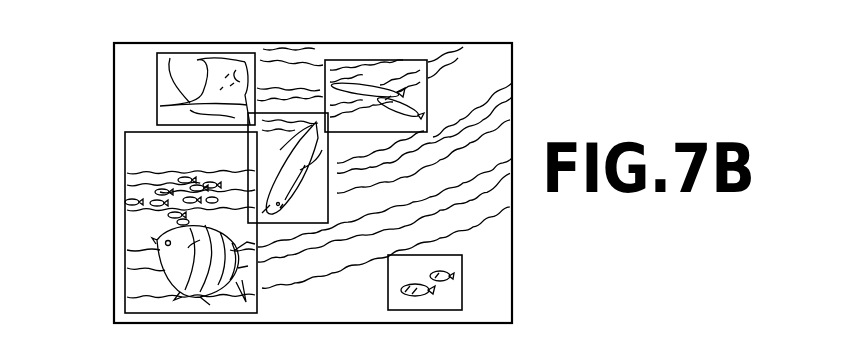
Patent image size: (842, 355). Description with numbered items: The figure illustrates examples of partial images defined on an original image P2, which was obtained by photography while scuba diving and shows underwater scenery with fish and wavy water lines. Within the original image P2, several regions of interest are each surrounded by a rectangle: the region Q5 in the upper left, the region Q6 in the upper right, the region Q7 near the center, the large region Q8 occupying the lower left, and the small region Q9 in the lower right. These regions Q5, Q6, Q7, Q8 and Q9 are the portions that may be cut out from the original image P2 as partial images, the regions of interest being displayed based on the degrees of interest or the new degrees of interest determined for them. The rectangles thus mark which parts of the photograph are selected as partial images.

The original image P2 is at (512, 58).
The partial image region Q5 is at (250, 53).
The partial image region Q6 is at (420, 60).
The partial image region Q7 is at (290, 113).
The partial image region Q8 is at (114, 190).
The partial image region Q9 is at (462, 267).